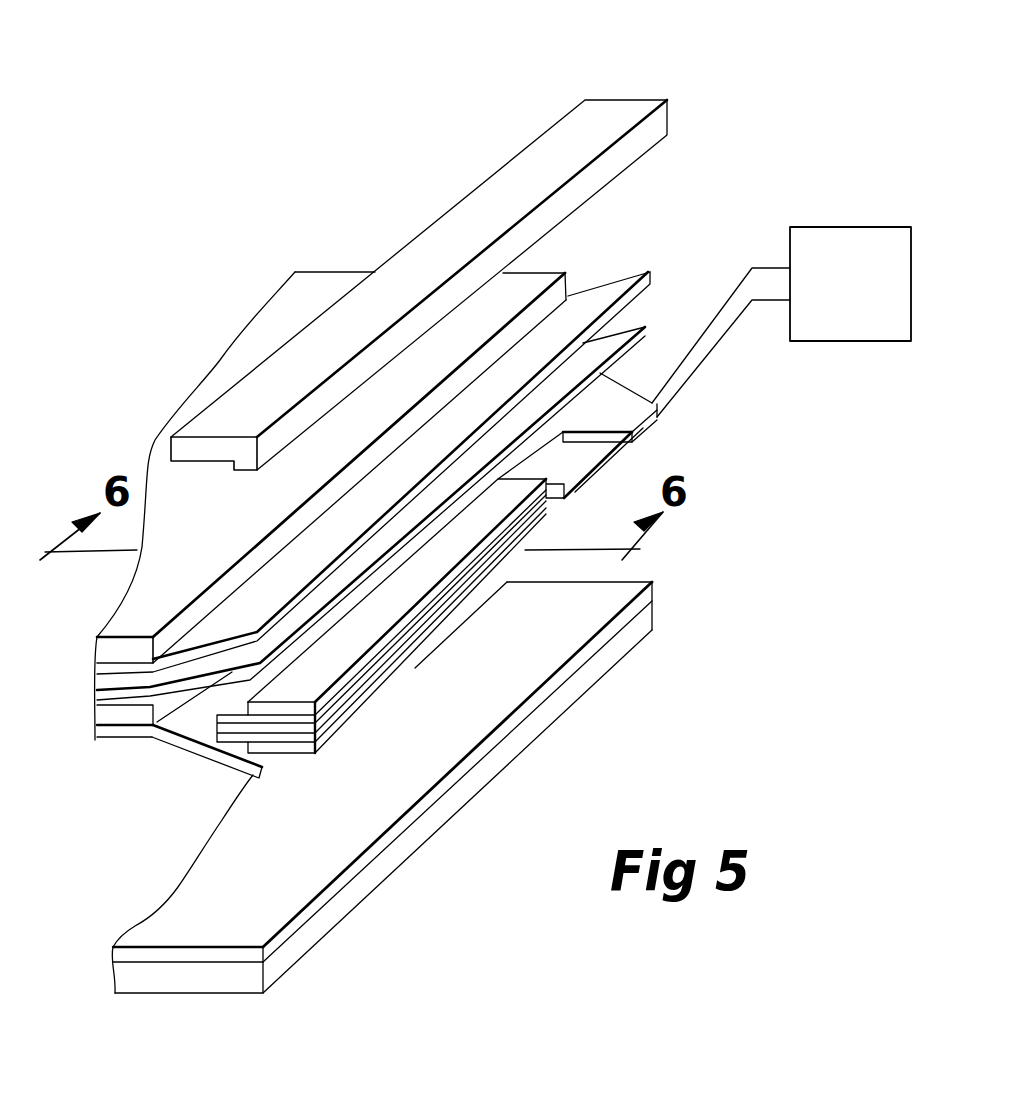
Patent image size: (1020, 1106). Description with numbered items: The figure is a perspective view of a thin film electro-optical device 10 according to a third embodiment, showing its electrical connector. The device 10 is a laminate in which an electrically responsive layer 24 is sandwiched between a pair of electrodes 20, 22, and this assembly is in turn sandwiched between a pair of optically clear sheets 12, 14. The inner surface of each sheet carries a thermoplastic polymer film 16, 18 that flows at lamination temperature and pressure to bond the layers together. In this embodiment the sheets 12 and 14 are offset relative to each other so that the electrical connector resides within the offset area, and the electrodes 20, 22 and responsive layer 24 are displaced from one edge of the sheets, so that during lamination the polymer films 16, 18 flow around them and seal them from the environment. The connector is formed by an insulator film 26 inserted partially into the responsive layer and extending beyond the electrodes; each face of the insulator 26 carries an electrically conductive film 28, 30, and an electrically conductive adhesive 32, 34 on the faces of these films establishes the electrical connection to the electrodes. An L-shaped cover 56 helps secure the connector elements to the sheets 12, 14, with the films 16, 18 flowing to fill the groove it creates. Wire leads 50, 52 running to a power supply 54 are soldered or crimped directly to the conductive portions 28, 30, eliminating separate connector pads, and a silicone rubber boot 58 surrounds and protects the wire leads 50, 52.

The electro-optical device 10 is at (757, 114).
The optically clear sheet 12 is at (543, 277).
The optically clear sheet 14 is at (167, 982).
The polymer film 16 is at (617, 285).
The polymer film 18 is at (565, 641).
The electrode 20 is at (95, 702).
The electrode 22 is at (178, 727).
The electrically responsive layer 24 is at (93, 720).
The insulator film 26 is at (233, 730).
The electrically conductive film 28 is at (342, 698).
The electrically conductive film 30 is at (307, 742).
The electrically conductive adhesive 32 is at (383, 627).
The electrically conductive adhesive 34 is at (296, 755).
The wire lead 50 is at (778, 266).
The wire lead 52 is at (770, 301).
The power supply 54 is at (853, 238).
The L-shaped cover 56 is at (642, 105).
The silicone rubber boot 58 is at (607, 443).